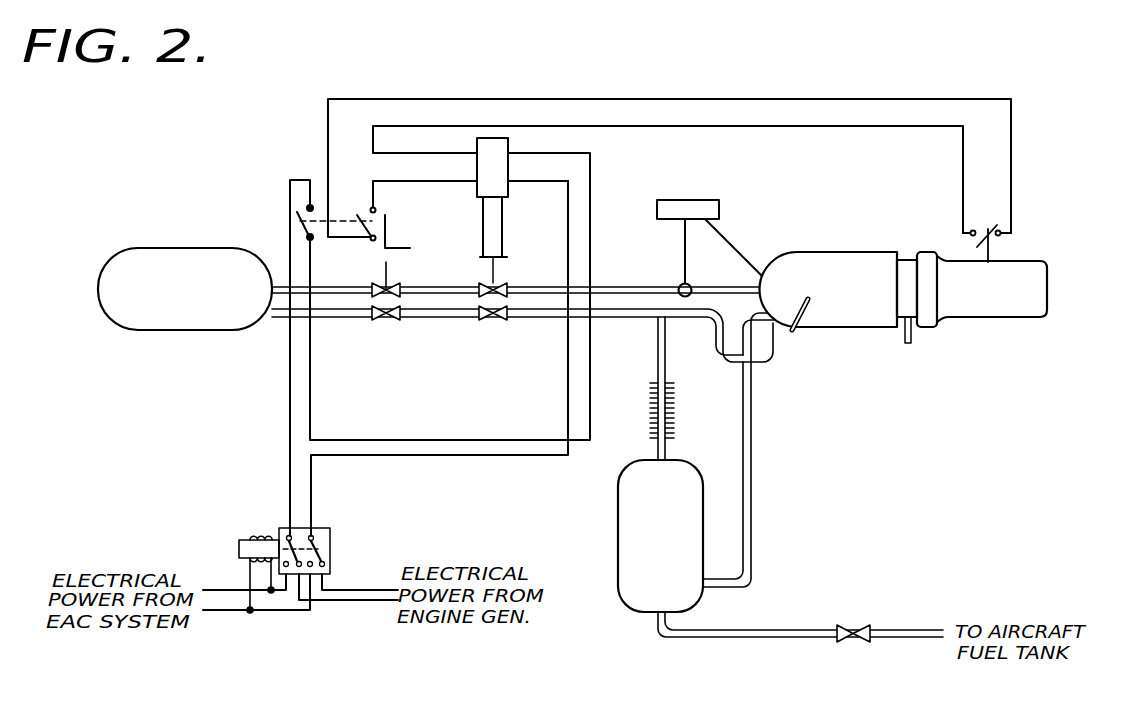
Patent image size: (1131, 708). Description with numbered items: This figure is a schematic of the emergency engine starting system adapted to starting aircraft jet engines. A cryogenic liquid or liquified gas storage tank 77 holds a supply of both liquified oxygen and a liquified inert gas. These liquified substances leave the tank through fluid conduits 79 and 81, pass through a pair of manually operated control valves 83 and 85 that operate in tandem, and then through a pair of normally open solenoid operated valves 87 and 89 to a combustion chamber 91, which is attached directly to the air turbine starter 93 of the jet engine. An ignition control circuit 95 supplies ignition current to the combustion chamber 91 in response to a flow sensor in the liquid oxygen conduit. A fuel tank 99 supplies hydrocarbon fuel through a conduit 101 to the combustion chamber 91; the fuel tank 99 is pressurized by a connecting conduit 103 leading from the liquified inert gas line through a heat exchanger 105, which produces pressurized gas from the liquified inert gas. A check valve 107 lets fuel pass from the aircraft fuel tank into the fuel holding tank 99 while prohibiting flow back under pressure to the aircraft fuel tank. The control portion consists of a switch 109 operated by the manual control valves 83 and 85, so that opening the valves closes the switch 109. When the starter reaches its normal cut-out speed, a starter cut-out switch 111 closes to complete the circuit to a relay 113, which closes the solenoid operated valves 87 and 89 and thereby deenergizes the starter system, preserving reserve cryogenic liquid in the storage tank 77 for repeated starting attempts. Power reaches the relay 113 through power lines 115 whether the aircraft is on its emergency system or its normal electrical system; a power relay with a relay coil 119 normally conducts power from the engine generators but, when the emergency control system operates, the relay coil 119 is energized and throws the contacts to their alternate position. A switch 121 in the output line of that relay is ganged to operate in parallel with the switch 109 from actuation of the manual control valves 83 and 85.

The cryogenic liquid or liquified gas storage tank 77 is at (170, 248).
The fluid conduit 79 is at (344, 292).
The fluid conduit 81 is at (350, 320).
The manually operated control valve 83 is at (380, 282).
The manually operated control valve 85 is at (382, 328).
The normally open solenoid operated valve 87 is at (484, 284).
The normally open solenoid operated valve 89 is at (488, 326).
The combustion chamber 91 is at (830, 250).
The air turbine starter 93 is at (978, 318).
The ignition control circuit 95 is at (700, 200).
The fuel tank 99 is at (617, 520).
The conduit 101 is at (752, 478).
The connecting conduit 103 is at (657, 352).
The heat exchanger 105 is at (674, 403).
The check valve 107 is at (842, 624).
The switch 109 is at (358, 212).
The starter cut-out switch 111 is at (996, 222).
The relay 113 is at (508, 152).
The power lines 115 is at (569, 190).
The relay coil 119 is at (254, 540).
The switch 121 is at (296, 222).